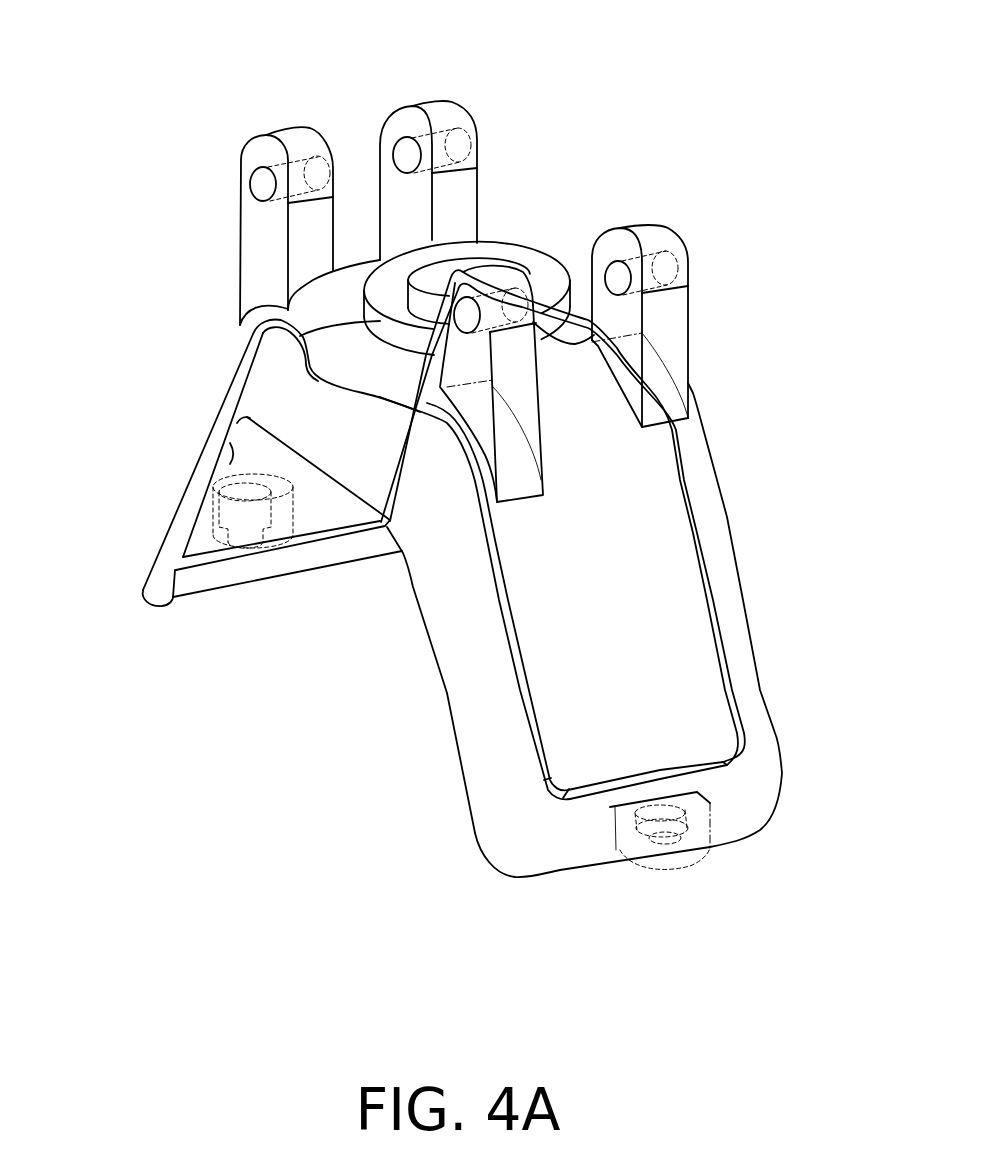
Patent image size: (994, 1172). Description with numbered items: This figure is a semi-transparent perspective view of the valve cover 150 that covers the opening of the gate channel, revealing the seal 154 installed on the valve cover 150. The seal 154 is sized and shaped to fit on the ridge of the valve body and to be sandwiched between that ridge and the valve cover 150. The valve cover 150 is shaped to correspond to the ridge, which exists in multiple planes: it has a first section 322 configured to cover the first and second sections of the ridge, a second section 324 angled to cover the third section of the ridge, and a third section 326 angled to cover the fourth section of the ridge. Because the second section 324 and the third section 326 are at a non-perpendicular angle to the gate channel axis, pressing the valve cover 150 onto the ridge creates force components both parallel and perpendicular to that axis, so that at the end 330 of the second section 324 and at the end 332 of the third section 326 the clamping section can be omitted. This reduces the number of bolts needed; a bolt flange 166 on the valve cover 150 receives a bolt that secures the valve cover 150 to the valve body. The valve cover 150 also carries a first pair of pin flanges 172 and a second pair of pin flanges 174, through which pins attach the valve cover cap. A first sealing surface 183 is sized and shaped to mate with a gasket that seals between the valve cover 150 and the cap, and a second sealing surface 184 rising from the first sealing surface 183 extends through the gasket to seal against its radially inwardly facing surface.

The valve cover 150 is at (453, 708).
The seal 154 is at (505, 623).
The bolt flange 166 is at (707, 847).
The first pair of pin flanges 172 is at (418, 100).
The second pair of pin flanges 174 is at (567, 280).
The first sealing surface 183 is at (487, 248).
The second sealing surface 184 is at (262, 332).
The first section 322 is at (307, 397).
The second section 324 is at (470, 780).
The third section 326 is at (172, 512).
The end of the second section 330 is at (590, 870).
The end of the third section 332 is at (260, 580).